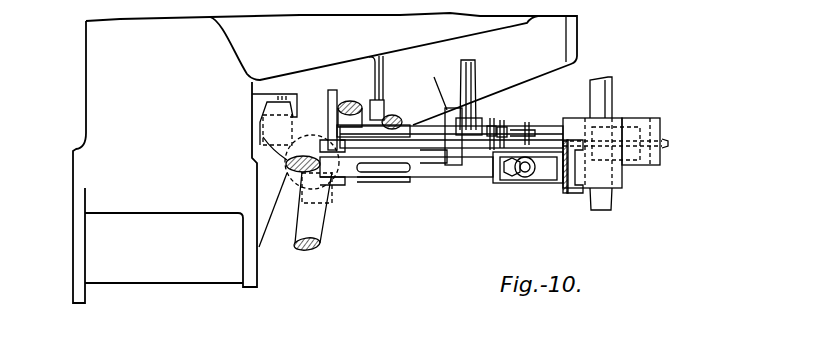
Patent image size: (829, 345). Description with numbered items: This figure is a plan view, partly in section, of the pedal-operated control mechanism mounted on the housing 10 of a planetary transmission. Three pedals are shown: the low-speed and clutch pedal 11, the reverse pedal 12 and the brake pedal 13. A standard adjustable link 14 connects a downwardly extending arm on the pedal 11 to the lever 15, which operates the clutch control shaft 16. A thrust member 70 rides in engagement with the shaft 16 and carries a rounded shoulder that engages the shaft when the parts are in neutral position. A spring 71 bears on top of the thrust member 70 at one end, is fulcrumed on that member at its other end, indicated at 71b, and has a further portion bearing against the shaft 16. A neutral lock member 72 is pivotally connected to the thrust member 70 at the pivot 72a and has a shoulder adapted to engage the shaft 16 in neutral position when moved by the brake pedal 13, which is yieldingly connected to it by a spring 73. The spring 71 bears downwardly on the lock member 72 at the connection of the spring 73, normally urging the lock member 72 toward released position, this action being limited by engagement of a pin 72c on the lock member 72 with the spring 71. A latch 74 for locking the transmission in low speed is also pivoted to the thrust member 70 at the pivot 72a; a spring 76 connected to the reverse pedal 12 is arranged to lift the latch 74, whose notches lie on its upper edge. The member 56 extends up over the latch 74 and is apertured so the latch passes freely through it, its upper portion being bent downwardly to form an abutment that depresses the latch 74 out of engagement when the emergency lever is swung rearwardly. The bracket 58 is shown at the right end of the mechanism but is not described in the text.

The housing 10 is at (157, 276).
The low-speed and clutch pedal 11 is at (314, 226).
The reverse pedal 12 is at (289, 161).
The brake pedal 13 is at (353, 102).
The adjustable link 14 is at (337, 178).
The lever 15 is at (469, 168).
The clutch control shaft 16 is at (467, 119).
The member 56 is at (632, 121).
The bracket 58 is at (547, 173).
The thrust member 70 is at (445, 121).
The spring 71 is at (527, 128).
The fulcrum end of spring 71b is at (502, 128).
The neutral lock member 72 is at (481, 142).
The pivotal connection 72a is at (370, 180).
The pin 72c is at (492, 120).
The spring 73 is at (389, 122).
The latch 74 is at (664, 143).
The spring 76 is at (327, 142).